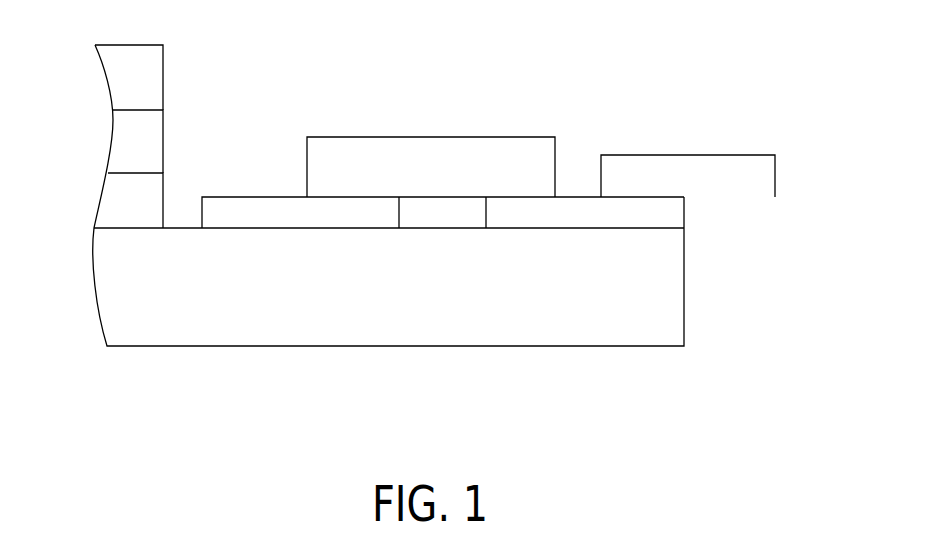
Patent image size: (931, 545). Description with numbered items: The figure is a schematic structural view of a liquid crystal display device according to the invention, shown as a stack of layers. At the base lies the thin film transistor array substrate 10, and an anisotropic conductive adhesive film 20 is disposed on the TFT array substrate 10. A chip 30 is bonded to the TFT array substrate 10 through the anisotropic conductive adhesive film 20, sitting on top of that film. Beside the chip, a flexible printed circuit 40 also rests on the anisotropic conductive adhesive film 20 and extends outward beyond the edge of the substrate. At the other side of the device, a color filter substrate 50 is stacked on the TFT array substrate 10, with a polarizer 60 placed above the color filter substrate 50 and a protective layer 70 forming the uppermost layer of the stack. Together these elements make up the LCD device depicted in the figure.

The thin film transistor (TFT) array substrate 10 is at (655, 303).
The anisotropic conductive adhesive film 20 is at (668, 215).
The chip 30 is at (456, 165).
The flexible printed circuit 40 is at (738, 170).
The color filter substrate 50 is at (127, 203).
The polarizer 60 is at (133, 142).
The protective layer 70 is at (142, 77).